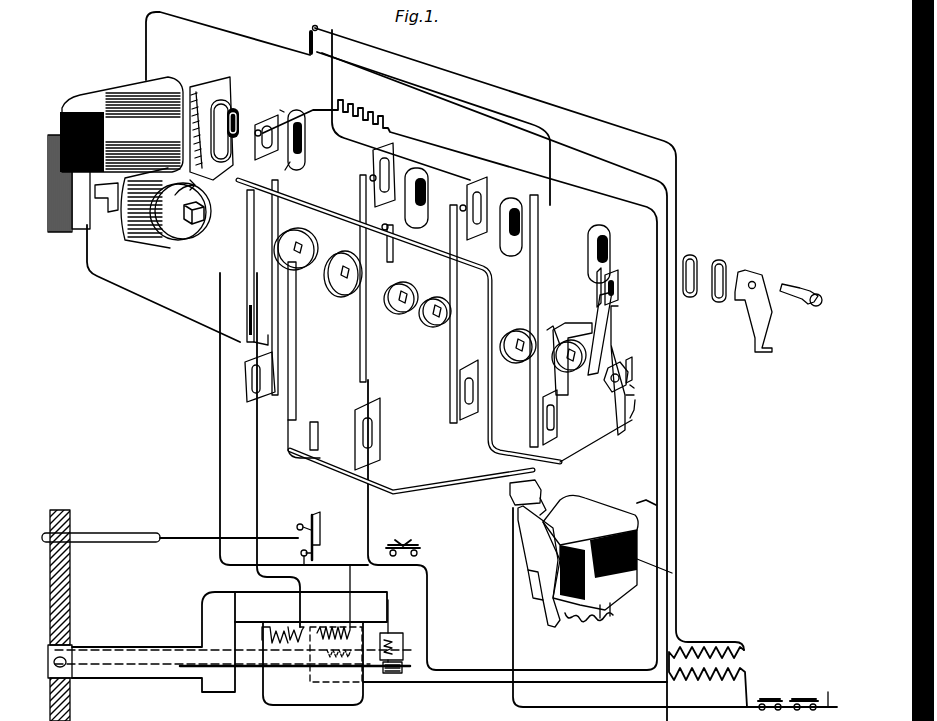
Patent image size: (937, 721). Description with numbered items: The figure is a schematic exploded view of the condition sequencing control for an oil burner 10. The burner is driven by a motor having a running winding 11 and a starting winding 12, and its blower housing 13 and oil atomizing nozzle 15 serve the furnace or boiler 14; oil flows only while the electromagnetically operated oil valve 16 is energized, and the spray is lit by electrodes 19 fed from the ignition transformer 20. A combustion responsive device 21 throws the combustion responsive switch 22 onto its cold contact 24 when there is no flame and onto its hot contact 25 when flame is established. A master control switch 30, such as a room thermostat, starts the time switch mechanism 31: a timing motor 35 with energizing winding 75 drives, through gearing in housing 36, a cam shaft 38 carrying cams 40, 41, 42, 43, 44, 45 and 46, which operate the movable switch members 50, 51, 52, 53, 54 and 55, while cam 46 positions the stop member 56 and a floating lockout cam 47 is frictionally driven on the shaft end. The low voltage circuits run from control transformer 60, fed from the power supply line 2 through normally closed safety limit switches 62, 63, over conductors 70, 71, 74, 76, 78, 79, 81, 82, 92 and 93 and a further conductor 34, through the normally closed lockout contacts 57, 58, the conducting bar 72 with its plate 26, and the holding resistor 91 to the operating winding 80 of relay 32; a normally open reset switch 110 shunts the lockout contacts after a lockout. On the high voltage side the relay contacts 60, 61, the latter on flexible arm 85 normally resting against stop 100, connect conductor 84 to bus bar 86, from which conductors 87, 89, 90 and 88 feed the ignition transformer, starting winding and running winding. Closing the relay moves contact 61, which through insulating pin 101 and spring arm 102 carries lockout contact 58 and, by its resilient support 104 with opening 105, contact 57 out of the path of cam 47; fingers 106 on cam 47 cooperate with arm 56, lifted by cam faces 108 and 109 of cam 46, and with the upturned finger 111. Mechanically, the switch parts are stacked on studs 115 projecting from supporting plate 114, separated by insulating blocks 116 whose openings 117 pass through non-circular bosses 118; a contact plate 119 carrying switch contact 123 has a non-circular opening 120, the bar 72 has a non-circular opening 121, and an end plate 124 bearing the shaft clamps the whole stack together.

The power supply line L2 2 is at (816, 691).
The burner 10 is at (366, 697).
The motor running winding 11 is at (338, 622).
The motor starting winding 12 is at (340, 680).
The blower housing 13 is at (390, 600).
The furnace or boiler 14 is at (72, 610).
The oil atomizing nozzle 15 is at (68, 668).
The electromagnetically operated oil valve 16 is at (403, 640).
The ignition electrodes 19 is at (72, 645).
The ignition transformer 20 is at (290, 626).
The combustion responsive device 21 is at (128, 532).
The combustion responsive switch 22 is at (300, 553).
The cold contact 24 is at (296, 526).
The hot contact 25 is at (312, 514).
The plate 26 is at (248, 318).
The master control switch 30 is at (307, 37).
The time switch mechanism 31 is at (125, 166).
The relay 32 is at (554, 552).
The conductor 34 is at (503, 113).
The timing motor 35 is at (100, 215).
The gearing housing 36 is at (150, 245).
The cam shaft 38 is at (192, 232).
The switch operating cam 40 is at (197, 245).
The switch operating cam 41 is at (302, 270).
The switch operating cam 42 is at (343, 296).
The switch operating cam 43 is at (405, 313).
The switch operating cam 44 is at (437, 326).
The switch operating cam 45 is at (518, 365).
The positioning cam 46 is at (540, 402).
The floating lockout cam 47 is at (612, 393).
The movable switch member 50 is at (247, 295).
The movable switch member 51 is at (280, 210).
The movable switch member 52 is at (360, 355).
The movable switch member 53 is at (399, 260).
The movable switch member 54 is at (453, 390).
The movable switch member 55 is at (539, 283).
The positioning member 56 is at (575, 332).
The lockout contact 57 is at (636, 422).
The lockout contact 58 is at (622, 430).
The relay contact 60 is at (745, 657).
The relay contact 61 is at (545, 500).
The safety limit switch 62 is at (768, 697).
The safety limit switch 63 is at (800, 697).
The conductor 70 is at (679, 500).
The conductor 71 is at (483, 668).
The conducting bar 72 is at (290, 448).
The conductor 74 is at (172, 316).
The energizing winding 75 is at (60, 118).
The conductor 76 is at (228, 26).
The conductor 78 is at (352, 146).
The conductor 79 is at (366, 396).
The relay operating winding 80 is at (600, 512).
The conductor 81 is at (517, 172).
The conductor 82 is at (650, 560).
The conductor 84 is at (520, 600).
The flexible conducting arm 85 is at (492, 305).
The bus bar 86 is at (425, 248).
The conductor 87 is at (256, 483).
The conductor 88 is at (470, 684).
The conductor 89 is at (367, 510).
The conductor 90 is at (219, 418).
The holding resistor 91 is at (372, 112).
The conductor 92 is at (320, 440).
The conductor 93 is at (318, 420).
The stop 100 is at (510, 492).
The insulating pin 101 is at (562, 461).
The spring arm 102 is at (473, 472).
The resilient support 104 is at (612, 290).
The opening 105 is at (633, 357).
The finger 106 is at (636, 390).
The cam face 108 is at (571, 380).
The cam face 109 is at (560, 328).
The reset switch 110 is at (395, 542).
The upturned finger 111 is at (634, 372).
The supporting plate 114 is at (200, 87).
The studs 115 is at (797, 290).
The insulating blocks 116 is at (215, 104).
The opening 117 is at (240, 110).
The non-circular boss 118 is at (258, 125).
The contact plate 119 is at (282, 122).
The non-circular opening 120 is at (290, 165).
The non-circular opening 121 is at (262, 343).
The switch contact 123 is at (283, 110).
The end plate 124 is at (770, 338).